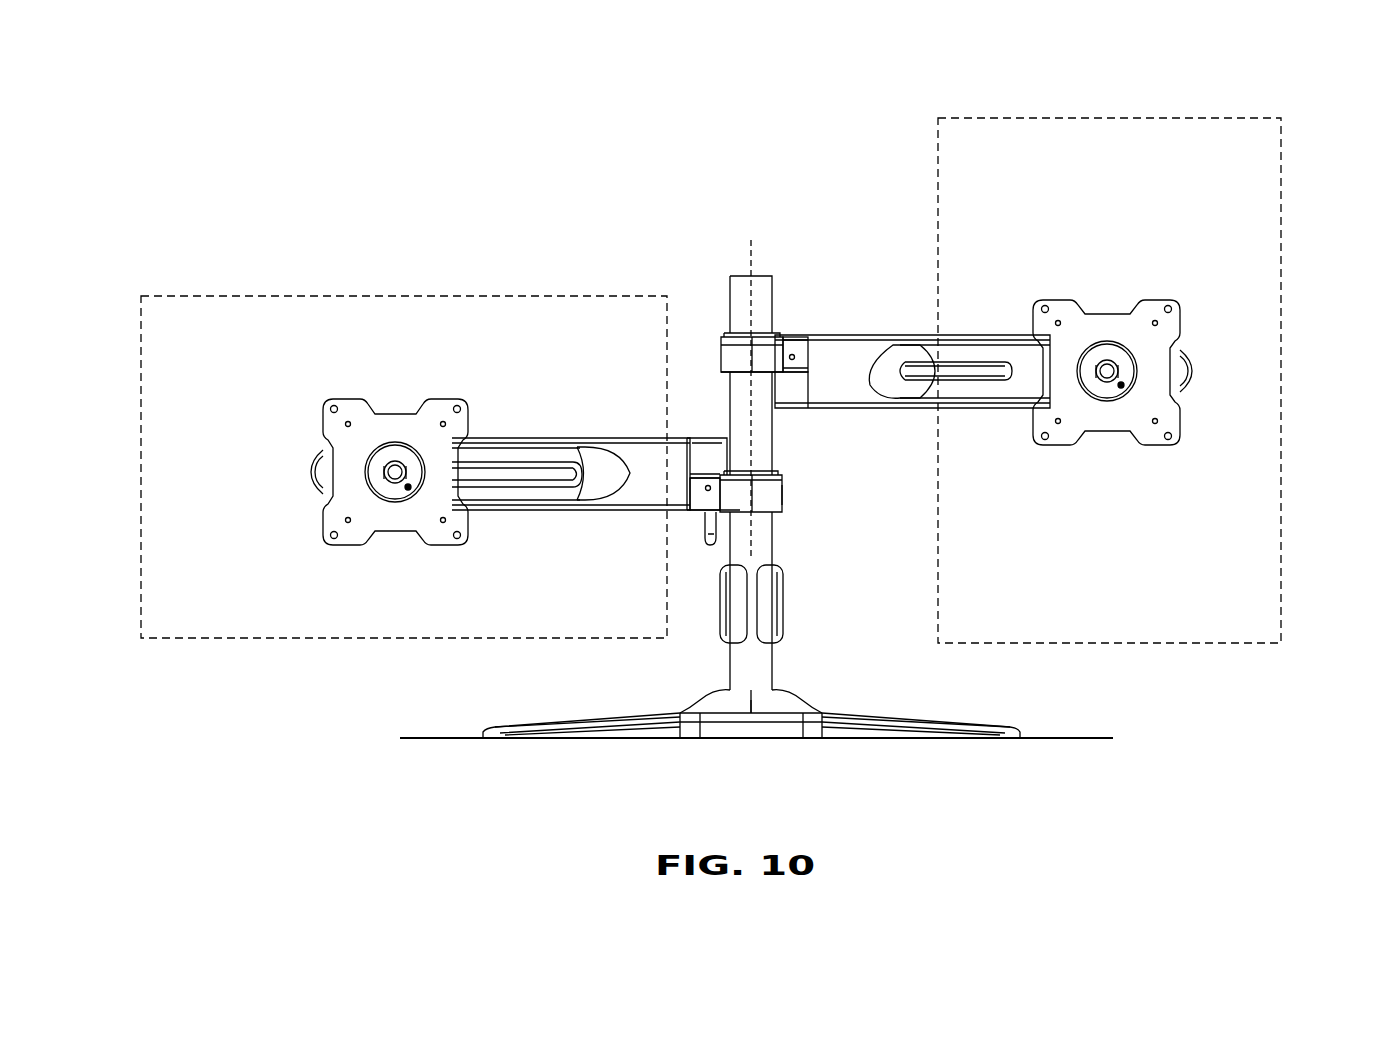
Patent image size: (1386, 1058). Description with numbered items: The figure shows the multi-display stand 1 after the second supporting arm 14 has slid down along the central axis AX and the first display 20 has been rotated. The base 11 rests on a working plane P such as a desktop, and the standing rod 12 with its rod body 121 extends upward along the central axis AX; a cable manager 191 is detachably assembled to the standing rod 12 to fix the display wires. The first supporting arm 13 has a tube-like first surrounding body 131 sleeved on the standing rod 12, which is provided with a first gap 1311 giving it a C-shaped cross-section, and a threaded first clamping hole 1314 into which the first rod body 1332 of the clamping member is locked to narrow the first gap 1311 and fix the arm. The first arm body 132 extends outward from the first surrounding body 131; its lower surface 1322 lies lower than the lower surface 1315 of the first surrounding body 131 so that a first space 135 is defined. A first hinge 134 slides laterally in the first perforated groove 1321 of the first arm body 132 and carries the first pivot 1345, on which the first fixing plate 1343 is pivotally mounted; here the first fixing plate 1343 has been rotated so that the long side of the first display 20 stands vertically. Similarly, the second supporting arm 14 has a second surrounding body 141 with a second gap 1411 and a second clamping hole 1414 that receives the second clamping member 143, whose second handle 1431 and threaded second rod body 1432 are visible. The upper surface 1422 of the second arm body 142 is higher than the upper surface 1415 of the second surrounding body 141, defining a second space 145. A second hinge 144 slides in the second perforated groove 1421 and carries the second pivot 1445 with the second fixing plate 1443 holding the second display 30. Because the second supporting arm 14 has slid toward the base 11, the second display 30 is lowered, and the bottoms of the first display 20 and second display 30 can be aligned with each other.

The multi-display stand 1 is at (150, 182).
The base 11 is at (468, 724).
The standing rod 12 is at (759, 458).
The rod body 121 is at (778, 553).
The cable manager 191 is at (768, 624).
The first supporting arm 13 is at (914, 274).
The first surrounding body 131 is at (722, 306).
The first gap 1311 is at (815, 336).
The first clamping hole 1314 is at (790, 402).
The lower surface of the first surrounding body 1315 is at (733, 373).
The first arm body 132 is at (962, 325).
The first perforated groove 1321 is at (1005, 362).
The lower surface of the first arm body 1322 is at (895, 410).
The first rod body 1332 is at (795, 354).
The first hinge 134 is at (1192, 257).
The first fixing plate 1343 is at (1165, 300).
The first pivot 1345 is at (1120, 373).
The first space 135 is at (720, 357).
The second supporting arm 14 is at (561, 378).
The second surrounding body 141 is at (786, 490).
The second gap 1411 is at (700, 520).
The second clamping hole 1414 is at (712, 474).
The upper surface of the second surrounding body 1415 is at (790, 470).
The second arm body 142 is at (614, 418).
The second perforated groove 1421 is at (515, 468).
The upper surface of the second arm body 1422 is at (657, 440).
The second clamping member 143 is at (710, 550).
The second handle 1431 is at (697, 510).
The second rod body 1432 is at (692, 486).
The second hinge 144 is at (364, 463).
The second fixing plate 1443 is at (340, 414).
The second pivot 1445 is at (397, 480).
The second space 145 is at (788, 493).
The first display 20 is at (1283, 262).
The second display 30 is at (176, 296).
The central axis AX is at (751, 258).
The working plane P is at (1068, 738).